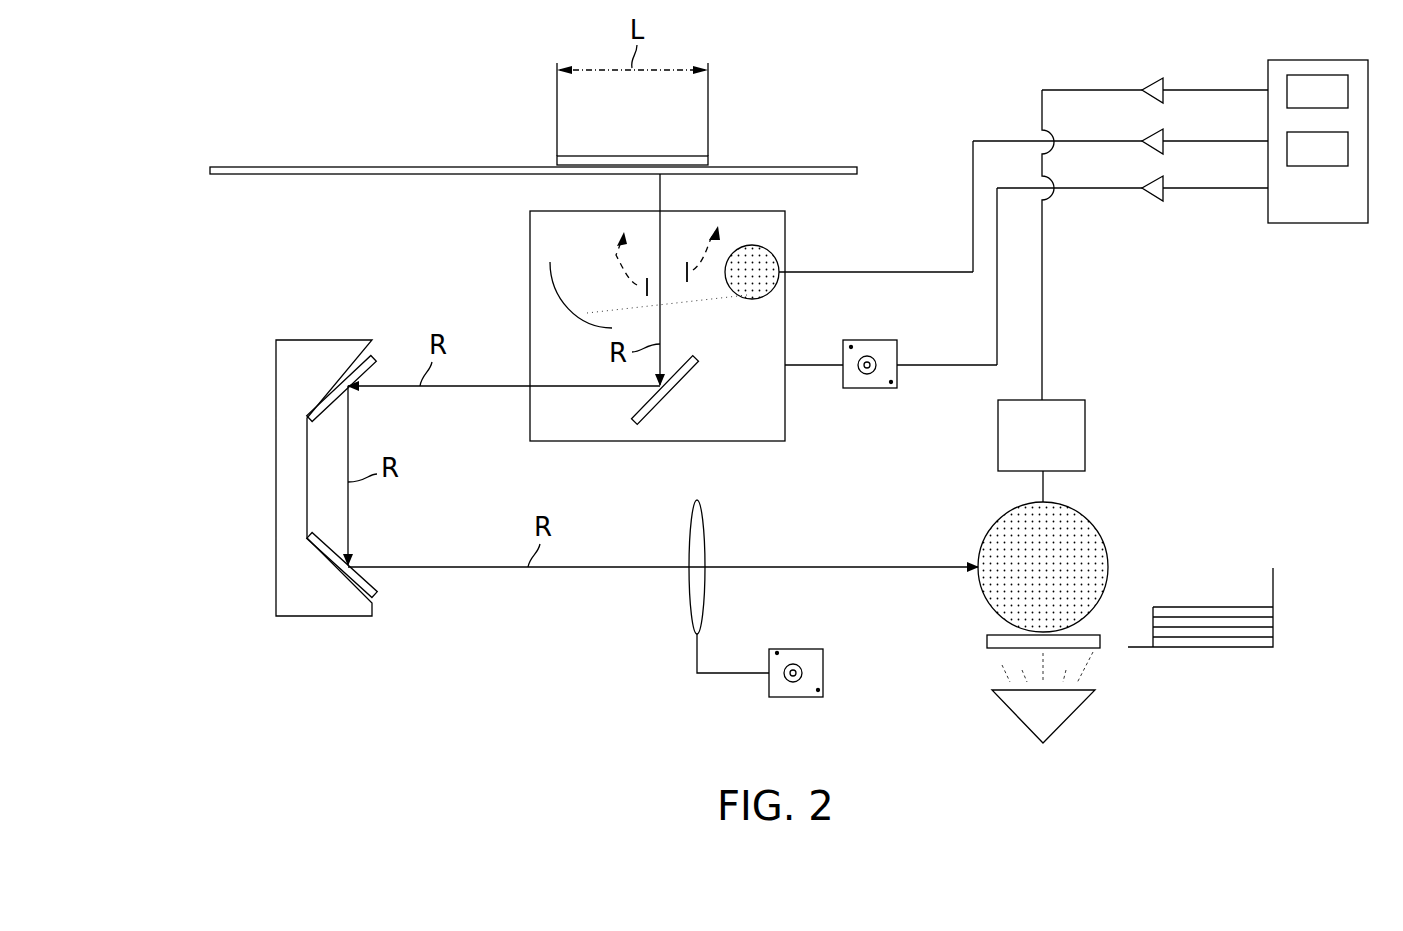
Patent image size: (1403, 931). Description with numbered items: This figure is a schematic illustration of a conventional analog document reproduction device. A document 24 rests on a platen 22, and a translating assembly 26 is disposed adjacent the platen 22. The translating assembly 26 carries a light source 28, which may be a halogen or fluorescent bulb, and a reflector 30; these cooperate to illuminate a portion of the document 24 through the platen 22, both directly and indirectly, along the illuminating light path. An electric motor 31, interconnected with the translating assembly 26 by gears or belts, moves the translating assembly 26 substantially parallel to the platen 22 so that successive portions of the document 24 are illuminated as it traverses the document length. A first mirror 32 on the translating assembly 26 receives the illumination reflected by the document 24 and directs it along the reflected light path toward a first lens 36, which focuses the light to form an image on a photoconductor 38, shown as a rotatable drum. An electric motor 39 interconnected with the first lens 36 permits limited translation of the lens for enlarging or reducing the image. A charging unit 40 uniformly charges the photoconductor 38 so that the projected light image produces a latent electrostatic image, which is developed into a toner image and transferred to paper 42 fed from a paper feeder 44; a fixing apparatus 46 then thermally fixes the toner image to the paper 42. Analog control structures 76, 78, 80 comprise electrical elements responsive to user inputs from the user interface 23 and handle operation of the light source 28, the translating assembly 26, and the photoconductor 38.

The platen 22 is at (770, 165).
The user interface 23 is at (1305, 223).
The document 24 is at (648, 155).
The translating assembly 26 is at (785, 230).
The light source 28 is at (752, 300).
The reflector 30 is at (550, 264).
The electric motor 31 is at (862, 388).
The first mirror 32 is at (688, 396).
The first lens 36 is at (704, 518).
The photoconductor 38 is at (978, 580).
The electric motor 39 is at (823, 690).
The charging unit 40 is at (1085, 428).
The paper 42 is at (1150, 610).
The paper feeder 44 is at (1273, 580).
The fixing apparatus 46 is at (1070, 715).
The analog control structure 76 is at (1150, 78).
The analog control structure 78 is at (1143, 138).
The analog control structure 80 is at (1148, 201).